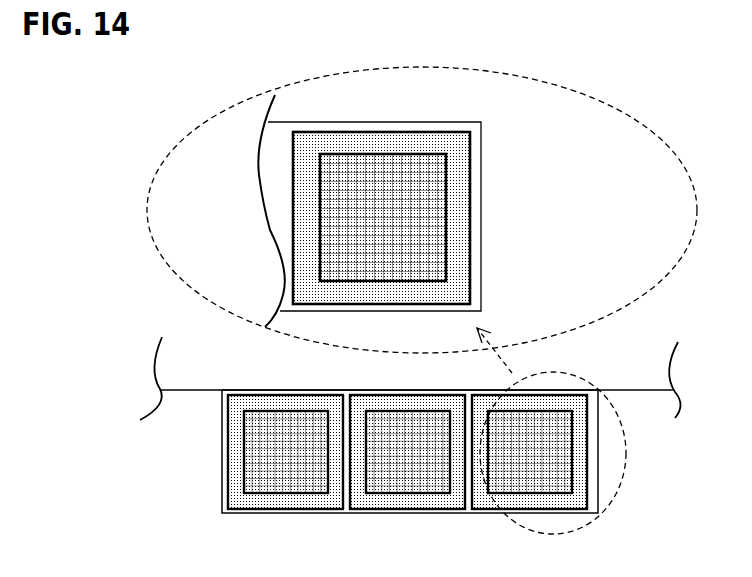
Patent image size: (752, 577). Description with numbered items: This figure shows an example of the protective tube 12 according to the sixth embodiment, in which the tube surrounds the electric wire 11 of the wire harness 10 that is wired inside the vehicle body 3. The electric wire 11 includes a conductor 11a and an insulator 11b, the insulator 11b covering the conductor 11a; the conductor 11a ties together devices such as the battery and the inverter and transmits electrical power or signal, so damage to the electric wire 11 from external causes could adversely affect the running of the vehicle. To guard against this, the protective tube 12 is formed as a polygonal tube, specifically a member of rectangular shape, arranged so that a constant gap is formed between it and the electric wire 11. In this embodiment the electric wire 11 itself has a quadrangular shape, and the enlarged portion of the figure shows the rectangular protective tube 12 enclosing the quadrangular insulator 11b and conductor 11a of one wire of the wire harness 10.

The vehicle body 3 is at (182, 377).
The wire harness 10 is at (613, 512).
The electric wire 11 is at (460, 218).
The conductor 11a is at (575, 212).
The insulator 11b is at (471, 218).
The protective tube 12 is at (481, 190).